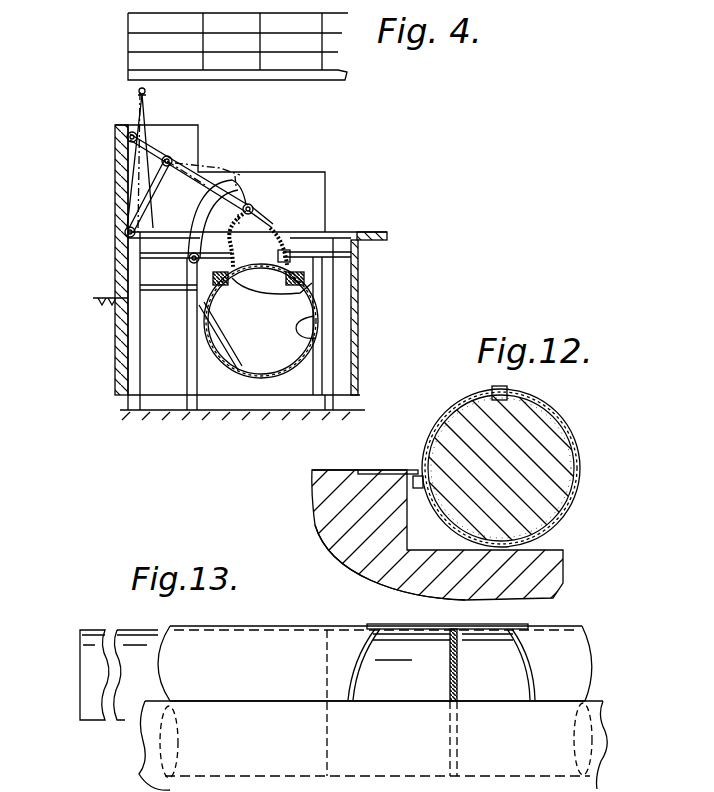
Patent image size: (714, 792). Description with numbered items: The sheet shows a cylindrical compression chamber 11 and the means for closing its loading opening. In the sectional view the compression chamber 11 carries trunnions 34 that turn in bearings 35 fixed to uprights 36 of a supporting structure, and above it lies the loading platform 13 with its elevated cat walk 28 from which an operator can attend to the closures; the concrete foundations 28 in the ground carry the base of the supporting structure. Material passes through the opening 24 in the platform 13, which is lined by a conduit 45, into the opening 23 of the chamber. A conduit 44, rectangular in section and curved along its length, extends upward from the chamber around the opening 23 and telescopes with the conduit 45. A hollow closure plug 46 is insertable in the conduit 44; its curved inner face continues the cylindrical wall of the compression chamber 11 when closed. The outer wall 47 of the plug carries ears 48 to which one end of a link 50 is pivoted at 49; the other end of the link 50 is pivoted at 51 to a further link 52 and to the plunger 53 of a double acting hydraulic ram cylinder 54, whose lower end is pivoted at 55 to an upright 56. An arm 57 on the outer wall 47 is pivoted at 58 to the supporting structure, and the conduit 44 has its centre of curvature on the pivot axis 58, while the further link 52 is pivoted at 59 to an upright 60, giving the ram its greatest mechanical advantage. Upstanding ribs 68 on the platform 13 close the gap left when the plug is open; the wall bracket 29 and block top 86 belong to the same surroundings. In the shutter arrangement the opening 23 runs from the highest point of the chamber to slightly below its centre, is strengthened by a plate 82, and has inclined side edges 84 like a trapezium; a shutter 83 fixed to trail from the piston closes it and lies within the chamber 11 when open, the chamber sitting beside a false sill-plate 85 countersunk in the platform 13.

In FIG. 4, the compression chamber 11 is at (313, 368).
In FIG. 12, the compression chamber 11 is at (573, 441).
In FIG. 13, the compression chamber 11 is at (133, 738).
In FIG. 4, the loading platform 13 is at (372, 236).
In FIG. 12, the loading platform 13 is at (360, 498).
In FIG. 13, the loading platform 13 is at (562, 743).
In FIG. 4, the loading opening 23 is at (318, 292).
In FIG. 12, the loading opening 23 is at (435, 447).
In FIG. 4, the opening in the platform 24 is at (335, 233).
In FIG. 4, the cat walk 28 is at (128, 23).
In FIG. 4, the wall bracket 29 is at (108, 300).
In FIG. 4, the trunnions 34 is at (228, 368).
In FIG. 4, the bearings 35 is at (197, 320).
In FIG. 4, the uprights 36 is at (188, 308).
In FIG. 4, the conduit 44 is at (300, 292).
In FIG. 4, the conduit lining the platform opening 45 is at (292, 246).
In FIG. 4, the hollow closure plug 46 is at (305, 228).
In FIG. 4, the outer wall of the closure plug 47 is at (290, 246).
In FIG. 4, the ears 48 is at (278, 236).
In FIG. 4, the pivot connection 49 is at (263, 222).
In FIG. 4, the link 50 is at (252, 207).
In FIG. 4, the pivot connection 51 is at (222, 186).
In FIG. 4, the further link 52 is at (170, 160).
In FIG. 4, the plunger 53 is at (195, 175).
In FIG. 4, the double acting hydraulic ram cylinder 54 is at (160, 183).
In FIG. 4, the pivot connection 55 is at (150, 200).
In FIG. 4, the upright 56 is at (140, 235).
In FIG. 4, the arm 57 is at (198, 205).
In FIG. 4, the pivot 58 is at (105, 302).
In FIG. 4, the pivot connection 59 is at (130, 135).
In FIG. 4, the upright 60 is at (135, 150).
In FIG. 4, the upstanding ribs 68 is at (126, 232).
In FIG. 12, the plate 82 is at (322, 526).
In FIG. 13, the plate 82 is at (477, 629).
In FIG. 12, the shutter 83 is at (438, 428).
In FIG. 13, the shutter 83 is at (88, 642).
In FIG. 13, the inclined side edges 84 is at (356, 655).
In FIG. 12, the false sill-plate 85 is at (395, 470).
In FIG. 12, the block top 86 is at (340, 470).